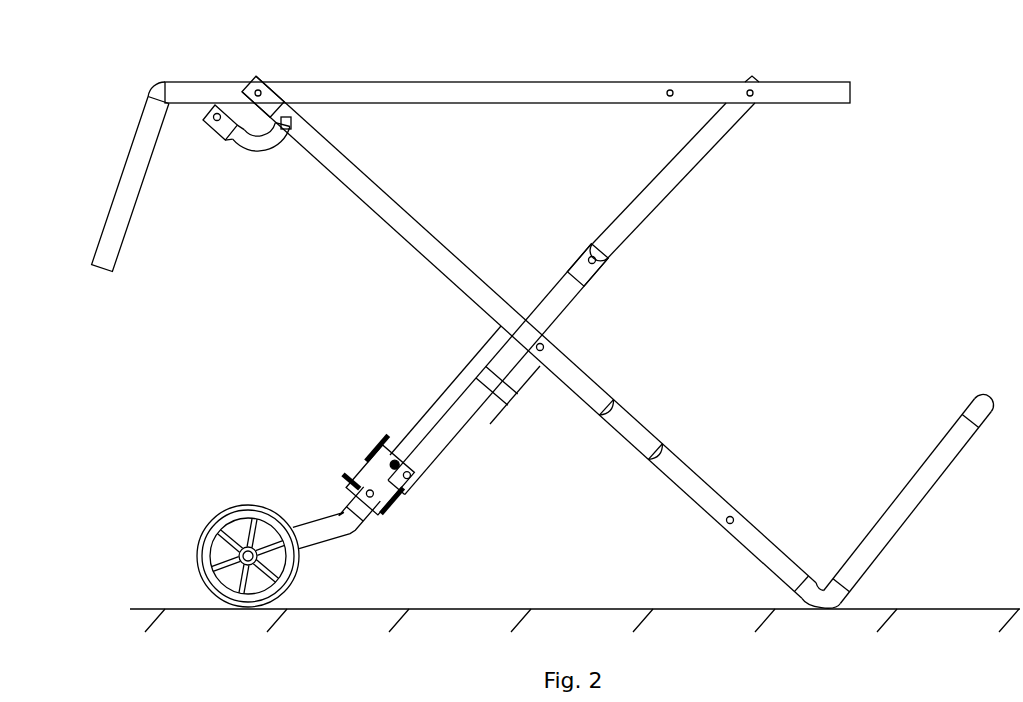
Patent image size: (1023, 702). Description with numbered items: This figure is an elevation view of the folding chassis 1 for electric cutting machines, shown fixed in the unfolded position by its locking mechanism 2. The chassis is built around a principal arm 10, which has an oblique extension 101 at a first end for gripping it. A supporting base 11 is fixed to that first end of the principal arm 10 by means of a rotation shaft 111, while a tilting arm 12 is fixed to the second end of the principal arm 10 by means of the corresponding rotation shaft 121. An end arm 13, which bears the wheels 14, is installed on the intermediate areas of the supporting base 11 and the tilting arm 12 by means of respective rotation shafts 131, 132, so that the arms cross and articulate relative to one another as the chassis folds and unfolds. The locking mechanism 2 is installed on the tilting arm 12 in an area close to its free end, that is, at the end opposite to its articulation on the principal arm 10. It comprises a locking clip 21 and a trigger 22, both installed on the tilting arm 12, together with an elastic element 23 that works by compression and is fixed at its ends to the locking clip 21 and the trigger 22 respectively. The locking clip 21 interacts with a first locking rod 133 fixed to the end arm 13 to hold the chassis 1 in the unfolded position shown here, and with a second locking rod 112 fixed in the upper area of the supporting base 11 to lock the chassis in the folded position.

The folding chassis 1 is at (589, 82).
The principal arm 10 is at (420, 95).
The oblique extension 101 is at (115, 220).
The supporting base 11 is at (590, 393).
The rotation shaft 111 is at (259, 78).
The second locking rod 112 is at (215, 125).
The tilting arm 12 is at (670, 183).
The rotation shaft 121 is at (756, 96).
The end arm 13 is at (463, 422).
The rotation shaft 131 is at (552, 342).
The rotation shaft 132 is at (597, 264).
The first locking rod 133 is at (412, 477).
The wheels 14 is at (217, 530).
The locking mechanism 2 is at (373, 450).
The locking clip 21 is at (388, 443).
The trigger 22 is at (350, 472).
The elastic element 23 is at (395, 503).